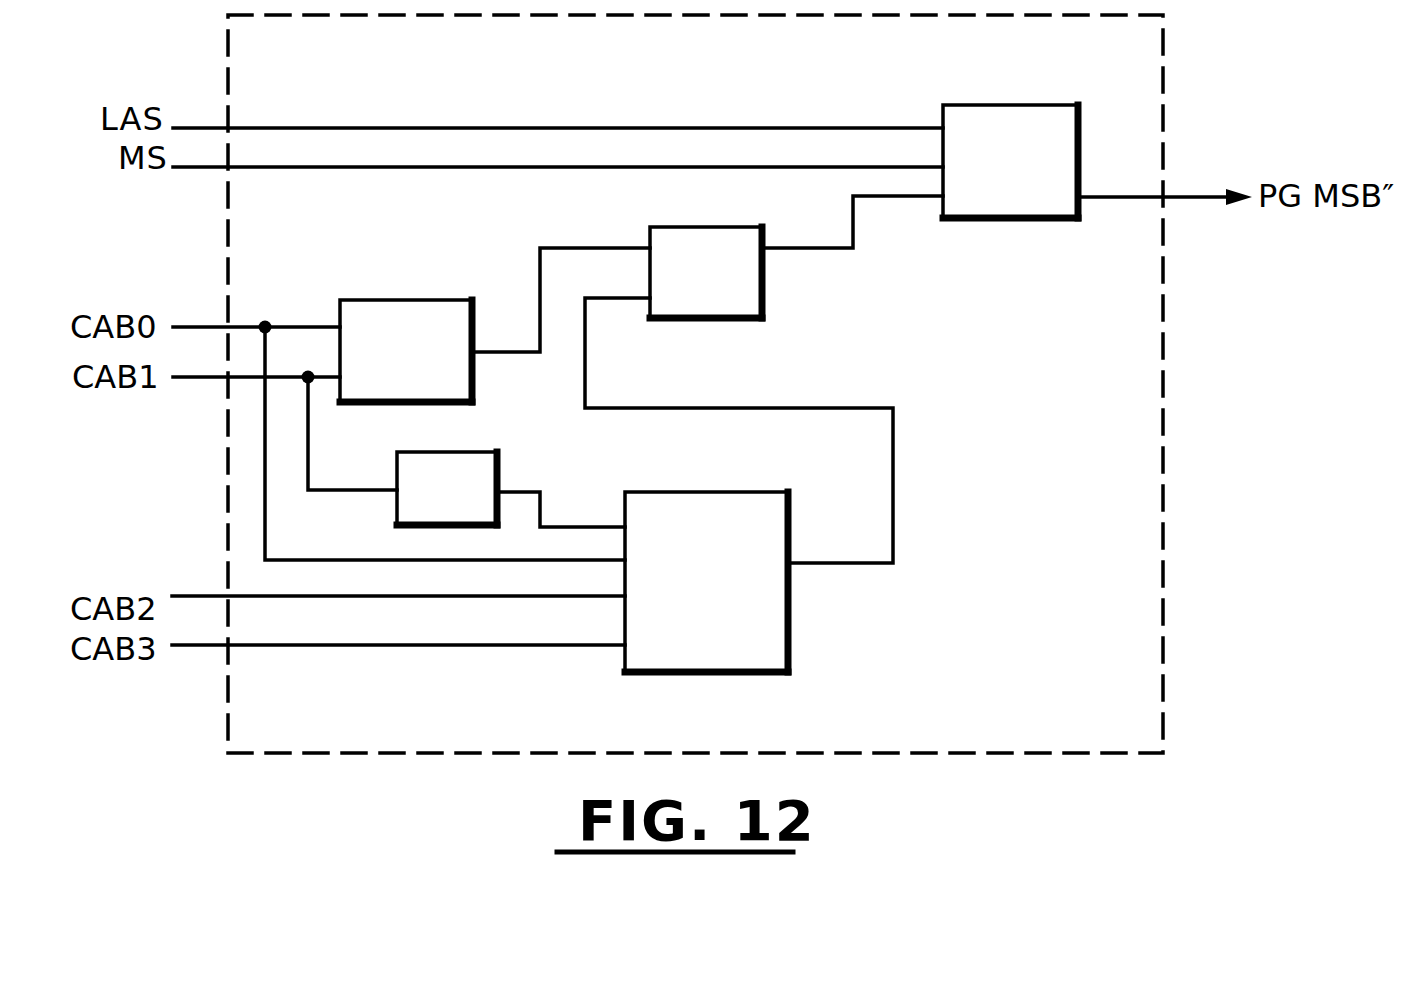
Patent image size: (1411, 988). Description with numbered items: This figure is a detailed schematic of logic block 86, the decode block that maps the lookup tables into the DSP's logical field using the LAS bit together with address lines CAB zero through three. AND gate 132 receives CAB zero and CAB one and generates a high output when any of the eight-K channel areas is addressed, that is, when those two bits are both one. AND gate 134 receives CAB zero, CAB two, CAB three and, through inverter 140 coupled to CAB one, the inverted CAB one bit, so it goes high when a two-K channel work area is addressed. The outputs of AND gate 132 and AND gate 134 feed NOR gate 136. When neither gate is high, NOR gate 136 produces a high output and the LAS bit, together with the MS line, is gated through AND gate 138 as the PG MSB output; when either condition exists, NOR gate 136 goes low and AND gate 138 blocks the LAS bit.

The logic block 86 is at (1162, 500).
The AND gate 132 is at (375, 302).
The AND gate 134 is at (788, 630).
The NOR gate 136 is at (762, 305).
The AND gate 138 is at (1017, 218).
The inverter 140 is at (494, 455).